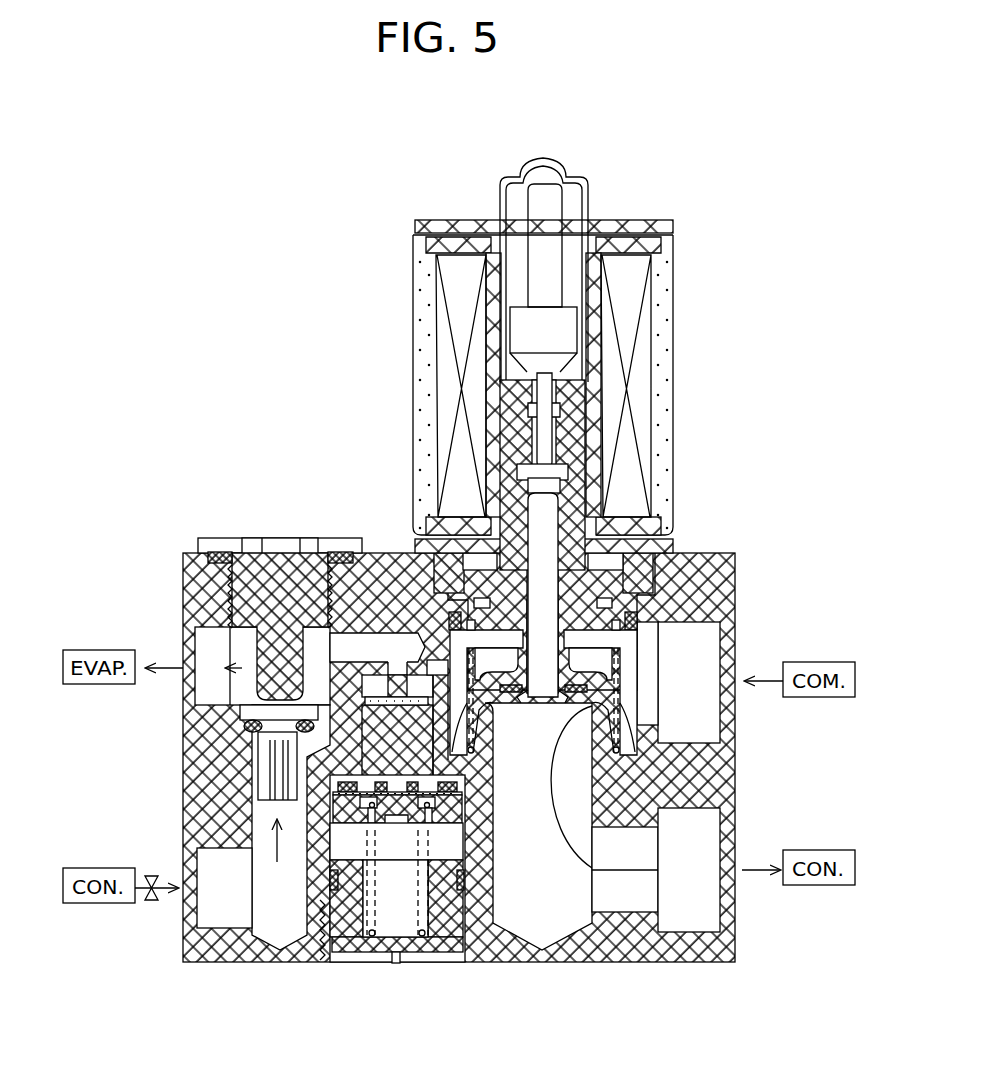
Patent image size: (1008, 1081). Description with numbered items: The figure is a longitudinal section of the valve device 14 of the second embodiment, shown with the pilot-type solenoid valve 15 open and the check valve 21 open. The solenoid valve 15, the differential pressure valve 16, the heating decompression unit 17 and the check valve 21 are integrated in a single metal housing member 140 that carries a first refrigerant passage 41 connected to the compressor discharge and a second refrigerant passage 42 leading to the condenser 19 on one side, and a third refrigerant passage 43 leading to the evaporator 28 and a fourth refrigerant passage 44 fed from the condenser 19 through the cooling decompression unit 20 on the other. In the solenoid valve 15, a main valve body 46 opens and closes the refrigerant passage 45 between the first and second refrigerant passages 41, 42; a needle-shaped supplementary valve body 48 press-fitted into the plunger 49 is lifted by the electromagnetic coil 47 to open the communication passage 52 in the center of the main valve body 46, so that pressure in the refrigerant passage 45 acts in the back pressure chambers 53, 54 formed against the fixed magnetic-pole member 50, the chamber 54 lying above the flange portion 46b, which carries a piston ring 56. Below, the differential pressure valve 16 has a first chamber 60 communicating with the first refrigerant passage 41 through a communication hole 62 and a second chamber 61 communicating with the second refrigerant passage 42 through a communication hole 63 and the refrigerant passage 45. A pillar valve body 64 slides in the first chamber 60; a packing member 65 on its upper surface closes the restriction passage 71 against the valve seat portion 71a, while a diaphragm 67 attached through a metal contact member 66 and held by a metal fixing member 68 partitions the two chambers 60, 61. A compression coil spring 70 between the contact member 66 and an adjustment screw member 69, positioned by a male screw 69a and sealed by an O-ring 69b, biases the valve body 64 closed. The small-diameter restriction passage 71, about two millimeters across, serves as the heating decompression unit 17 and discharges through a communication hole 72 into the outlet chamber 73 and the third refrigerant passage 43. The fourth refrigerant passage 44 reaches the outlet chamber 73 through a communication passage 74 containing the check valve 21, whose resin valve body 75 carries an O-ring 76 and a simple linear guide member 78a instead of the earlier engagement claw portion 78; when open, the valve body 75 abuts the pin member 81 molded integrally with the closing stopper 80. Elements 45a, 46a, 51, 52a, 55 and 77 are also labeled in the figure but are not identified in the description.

The valve device 14 is at (678, 968).
The pilot-type solenoid valve 15 is at (581, 403).
The differential pressure valve 16 is at (376, 917).
The heating decompression unit 17 is at (397, 677).
The condenser 19 is at (117, 903).
The cooling decompression unit 20 is at (148, 900).
The check valve 21 is at (258, 766).
The evaporator 28 is at (115, 650).
The first refrigerant passage 41 is at (735, 722).
The second refrigerant passage 42 is at (735, 918).
The third refrigerant passage 43 is at (217, 640).
The fourth refrigerant passage 44 is at (212, 963).
The refrigerant passage 45 is at (523, 808).
The valve seat 45a is at (595, 705).
The main valve body 46 is at (640, 650).
The valve element 46a is at (613, 672).
The flange portion 46b is at (640, 615).
The electromagnetic coil 47 is at (662, 312).
The supplementary valve body 48 is at (543, 432).
The plunger 49 is at (572, 342).
The fixed magnetic-pole member 50 is at (567, 440).
The push rod 51 is at (556, 410).
The communication passage 52 is at (552, 512).
The spring 52a is at (560, 472).
The back pressure chamber 53 is at (500, 457).
The back pressure chamber 54 is at (585, 590).
The plate 55 is at (680, 556).
The piston ring 56 is at (620, 600).
The first chamber 60 is at (259, 557).
The second chamber 61 is at (320, 900).
The communication hole 62 is at (440, 675).
The communication hole 63 is at (483, 847).
The pillar valve body 64 is at (493, 790).
The packing member 65 is at (280, 638).
The metal contact member 66 is at (343, 960).
The diaphragm 67 is at (330, 960).
The metal fixing member 68 is at (448, 963).
The adjustment screw member 69 is at (357, 963).
The male screw 69a is at (337, 963).
The O-ring 69b is at (467, 963).
The compression coil spring 70 is at (420, 963).
The restriction passage 71 is at (373, 597).
The valve seat portion 71a is at (370, 683).
The communication hole 72 is at (302, 618).
The outlet chamber 73 is at (183, 605).
The communication passage 74 is at (280, 815).
The valve body 75 is at (240, 712).
The O-ring 76 is at (244, 726).
The spring 77 is at (250, 760).
The engagement claw portion 78 is at (255, 790).
The guide member 78a is at (270, 900).
The closing stopper 80 is at (248, 640).
The pin member 81 is at (330, 648).
The housing member 140 is at (612, 955).